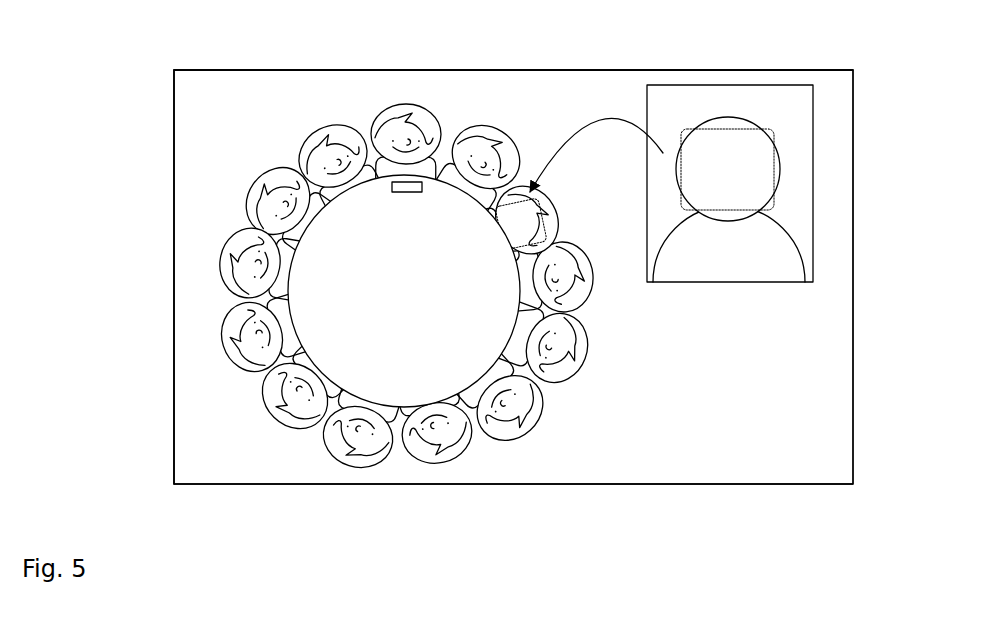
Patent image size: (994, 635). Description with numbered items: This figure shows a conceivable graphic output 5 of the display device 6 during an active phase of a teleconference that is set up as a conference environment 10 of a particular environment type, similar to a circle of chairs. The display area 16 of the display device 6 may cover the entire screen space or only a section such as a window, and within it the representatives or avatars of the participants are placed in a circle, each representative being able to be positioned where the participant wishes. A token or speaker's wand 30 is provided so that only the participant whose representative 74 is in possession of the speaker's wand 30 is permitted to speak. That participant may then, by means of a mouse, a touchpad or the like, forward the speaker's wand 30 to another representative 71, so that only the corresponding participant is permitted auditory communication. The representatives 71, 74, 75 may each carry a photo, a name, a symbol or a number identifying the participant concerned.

The video conference system 5 is at (143, 57).
The display device 6 is at (240, 70).
The conference environment 10 is at (853, 70).
The display area 16 is at (175, 219).
The speaker's wand 30 is at (400, 193).
The representative 71 is at (232, 338).
The representative 74 is at (393, 127).
The representative 75 is at (758, 174).